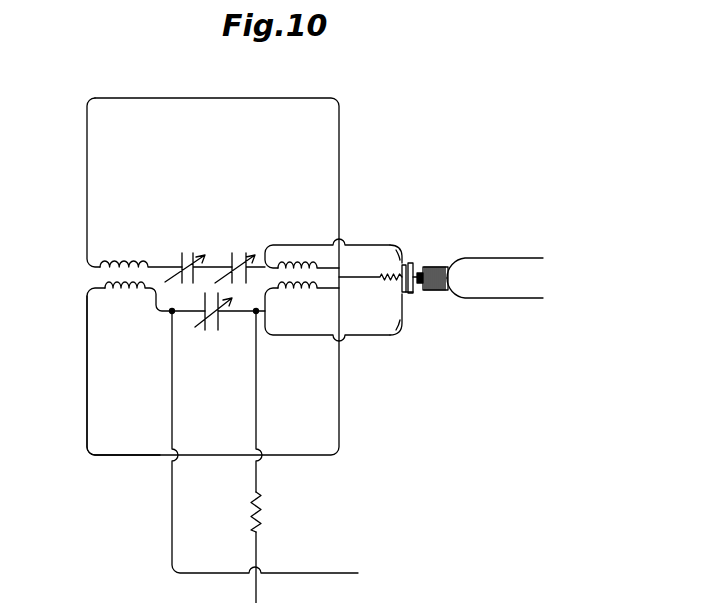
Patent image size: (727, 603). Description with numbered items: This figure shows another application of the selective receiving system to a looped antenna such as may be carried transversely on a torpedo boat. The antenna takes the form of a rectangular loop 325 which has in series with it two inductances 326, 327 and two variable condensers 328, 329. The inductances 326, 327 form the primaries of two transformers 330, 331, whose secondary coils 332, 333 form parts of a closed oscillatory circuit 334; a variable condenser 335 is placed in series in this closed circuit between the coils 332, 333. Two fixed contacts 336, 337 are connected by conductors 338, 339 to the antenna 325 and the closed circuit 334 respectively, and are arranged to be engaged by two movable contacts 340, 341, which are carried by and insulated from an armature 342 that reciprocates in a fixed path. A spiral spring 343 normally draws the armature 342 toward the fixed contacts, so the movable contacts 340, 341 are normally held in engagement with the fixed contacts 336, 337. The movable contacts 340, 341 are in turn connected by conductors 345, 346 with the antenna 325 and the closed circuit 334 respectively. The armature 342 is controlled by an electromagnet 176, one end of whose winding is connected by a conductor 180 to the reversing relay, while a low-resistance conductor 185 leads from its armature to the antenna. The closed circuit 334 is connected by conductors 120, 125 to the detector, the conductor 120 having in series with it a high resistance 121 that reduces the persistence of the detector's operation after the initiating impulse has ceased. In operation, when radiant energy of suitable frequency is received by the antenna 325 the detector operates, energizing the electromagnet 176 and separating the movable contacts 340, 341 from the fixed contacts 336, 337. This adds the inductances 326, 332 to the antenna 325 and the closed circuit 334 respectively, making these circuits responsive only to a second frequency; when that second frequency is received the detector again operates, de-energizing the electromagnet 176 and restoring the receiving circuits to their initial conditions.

The rectangular loop antenna 325 is at (339, 146).
The inductance 327 is at (132, 254).
The variable condenser 329 is at (185, 253).
The variable condenser 328 is at (240, 253).
The inductance 326 is at (298, 260).
The conductor 338 is at (349, 269).
The conductor 345 is at (373, 243).
The spiral spring 343 is at (400, 272).
The fixed contact 336 is at (403, 264).
The movable contact 340 is at (412, 266).
The armature 342 is at (414, 271).
The conductor 180 is at (532, 258).
The electromagnet 176 is at (448, 278).
The conductor 185 is at (540, 300).
The transformer 331 is at (130, 278).
The secondary coil 333 is at (130, 293).
The transformer 330 is at (313, 277).
The secondary coil 332 is at (297, 295).
The conductor 339 is at (369, 287).
The fixed contact 337 is at (400, 294).
The variable condenser 335 is at (214, 332).
The movable contact 341 is at (409, 293).
The conductor 346 is at (364, 337).
The closed oscillatory circuit 334 is at (87, 382).
The conductor 125 is at (172, 401).
The conductor 120 is at (256, 401).
The high resistance 121 is at (256, 513).